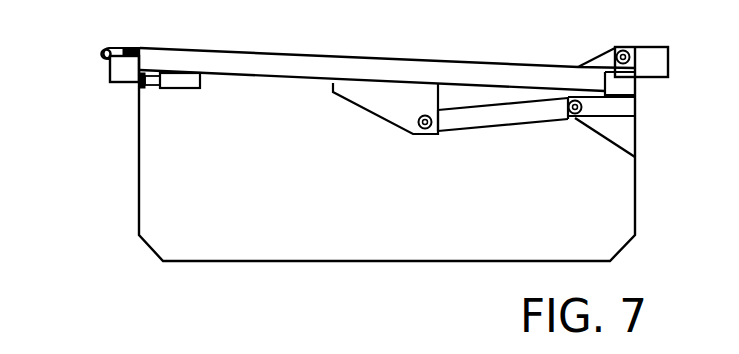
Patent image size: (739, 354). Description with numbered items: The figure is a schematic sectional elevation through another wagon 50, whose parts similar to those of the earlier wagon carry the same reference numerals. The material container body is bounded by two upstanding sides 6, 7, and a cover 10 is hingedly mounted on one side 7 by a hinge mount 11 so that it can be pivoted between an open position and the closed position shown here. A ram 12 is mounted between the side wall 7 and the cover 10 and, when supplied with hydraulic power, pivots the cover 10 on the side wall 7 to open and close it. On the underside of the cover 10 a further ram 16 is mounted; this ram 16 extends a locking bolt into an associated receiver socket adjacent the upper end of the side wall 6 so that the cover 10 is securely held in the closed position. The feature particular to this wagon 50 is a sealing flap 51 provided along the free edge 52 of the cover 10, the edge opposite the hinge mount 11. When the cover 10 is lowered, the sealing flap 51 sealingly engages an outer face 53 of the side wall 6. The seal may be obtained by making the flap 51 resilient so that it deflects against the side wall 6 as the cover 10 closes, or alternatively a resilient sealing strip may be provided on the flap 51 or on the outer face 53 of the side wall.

The side wall 6 is at (128, 197).
The side wall 7 is at (637, 170).
The cover 10 is at (395, 52).
The hinge 11 is at (628, 38).
The ram 12 is at (505, 135).
The ram 16 is at (175, 98).
The wagon 50 is at (522, 40).
The sealing flap 51 is at (95, 60).
The free edge 52 is at (123, 40).
The outer face 53 is at (108, 75).